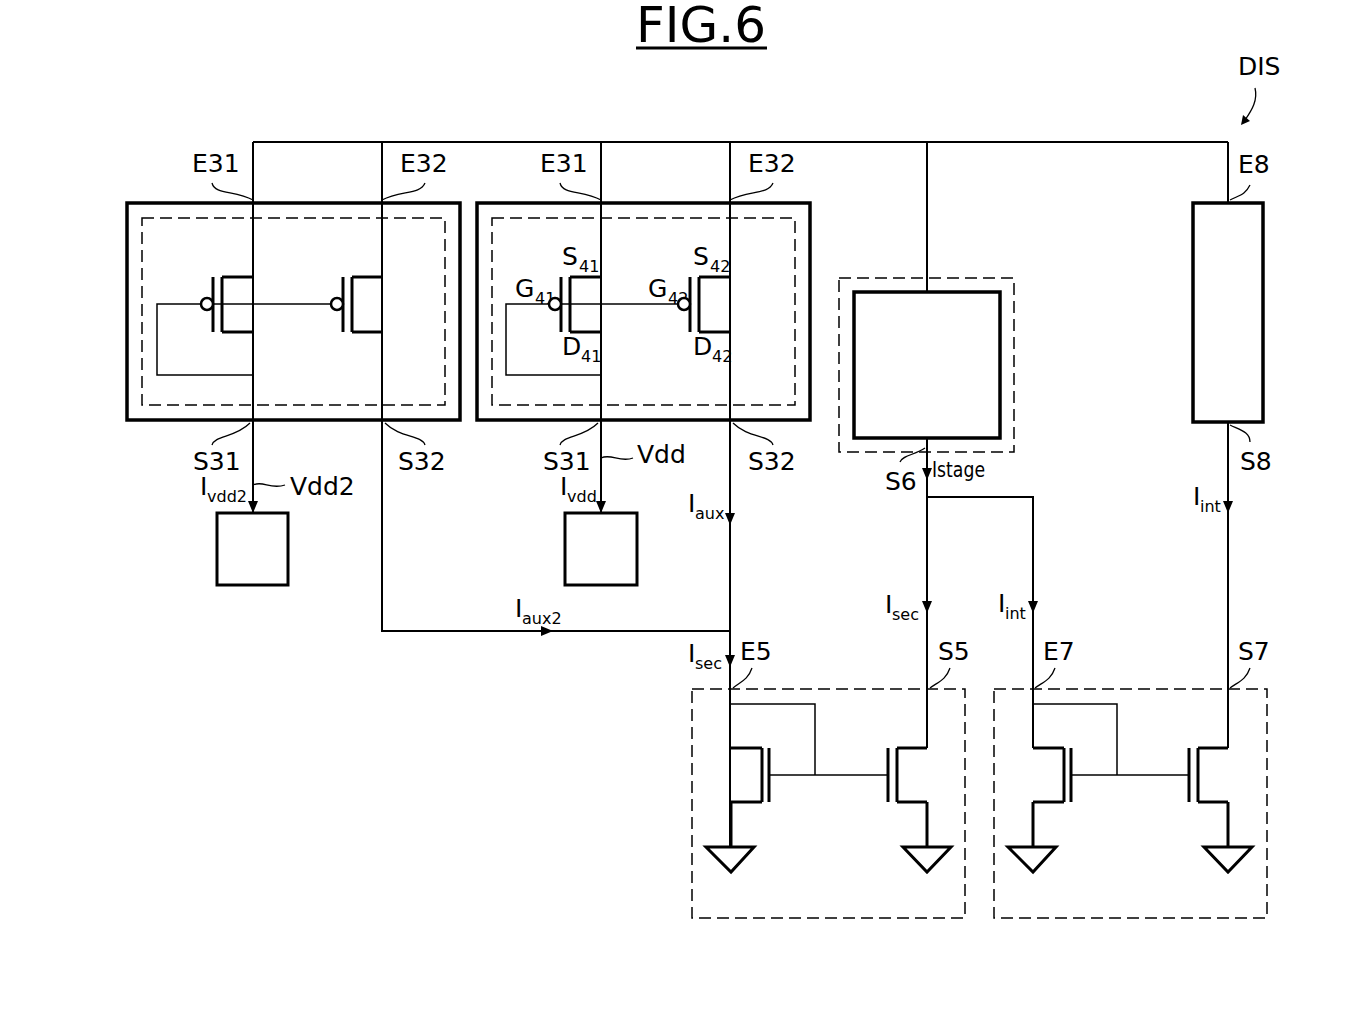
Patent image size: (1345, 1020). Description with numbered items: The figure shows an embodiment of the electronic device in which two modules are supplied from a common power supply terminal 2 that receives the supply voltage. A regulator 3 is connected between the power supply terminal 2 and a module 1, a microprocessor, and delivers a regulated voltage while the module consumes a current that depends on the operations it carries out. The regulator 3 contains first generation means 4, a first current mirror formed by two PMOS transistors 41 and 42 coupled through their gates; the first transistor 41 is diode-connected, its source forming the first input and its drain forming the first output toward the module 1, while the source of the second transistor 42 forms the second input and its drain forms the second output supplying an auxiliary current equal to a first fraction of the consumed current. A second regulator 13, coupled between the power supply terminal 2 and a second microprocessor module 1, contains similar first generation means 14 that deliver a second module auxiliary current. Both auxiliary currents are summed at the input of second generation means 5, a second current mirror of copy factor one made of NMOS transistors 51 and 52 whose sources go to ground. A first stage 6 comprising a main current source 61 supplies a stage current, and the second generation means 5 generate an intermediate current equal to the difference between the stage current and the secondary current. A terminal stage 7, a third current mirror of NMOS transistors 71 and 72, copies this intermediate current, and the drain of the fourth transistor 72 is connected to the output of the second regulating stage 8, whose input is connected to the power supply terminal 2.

The module 1 is at (217, 552).
The power supply terminal 2 is at (601, 141).
The regulator 3 is at (500, 203).
The first generation means 4 is at (640, 218).
The second generation means 5 is at (820, 688).
The first stage 6 is at (1014, 308).
The terminal stage 7 is at (1122, 688).
The second regulating stage 8 is at (1263, 310).
The second regulator 13 is at (150, 203).
The first generation means 14 is at (290, 218).
The first transistor 41 is at (266, 320).
The second transistor 42 is at (394, 320).
The first NMOS transistor 51 is at (721, 772).
The second NMOS transistor 52 is at (934, 772).
The main current source 61 is at (1000, 363).
The third NMOS transistor 71 is at (1023, 772).
The fourth NMOS transistor 72 is at (1235, 772).